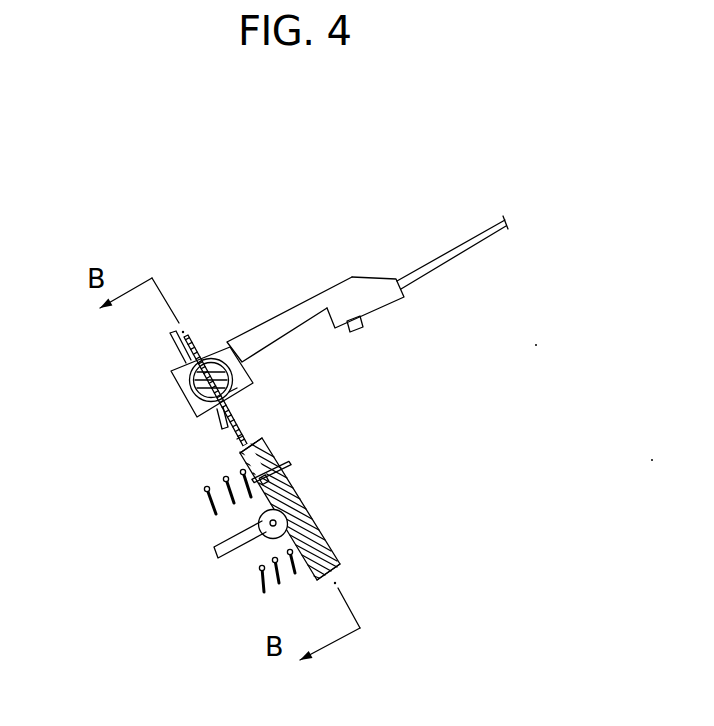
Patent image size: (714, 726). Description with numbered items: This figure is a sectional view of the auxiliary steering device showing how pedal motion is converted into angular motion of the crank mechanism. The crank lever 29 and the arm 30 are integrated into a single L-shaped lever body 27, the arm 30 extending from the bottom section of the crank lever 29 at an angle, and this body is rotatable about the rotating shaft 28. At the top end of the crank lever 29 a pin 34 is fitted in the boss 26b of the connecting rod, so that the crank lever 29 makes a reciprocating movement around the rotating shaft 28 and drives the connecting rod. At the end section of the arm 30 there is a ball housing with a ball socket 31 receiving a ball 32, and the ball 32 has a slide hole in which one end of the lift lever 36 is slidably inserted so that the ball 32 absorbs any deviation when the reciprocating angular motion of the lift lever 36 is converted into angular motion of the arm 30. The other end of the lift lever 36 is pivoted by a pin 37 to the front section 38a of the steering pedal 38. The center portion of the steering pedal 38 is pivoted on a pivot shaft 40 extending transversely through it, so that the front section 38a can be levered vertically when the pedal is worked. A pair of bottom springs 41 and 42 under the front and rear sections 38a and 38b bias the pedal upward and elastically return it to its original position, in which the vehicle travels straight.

The L-shaped lever body 27 is at (330, 220).
The crank lever 29 is at (322, 296).
The arm 30 is at (223, 347).
The boss 26b is at (392, 296).
The pin 34 is at (352, 326).
The rotating shaft 28 is at (183, 353).
The ball 32 is at (197, 390).
The ball socket 31 is at (233, 392).
The lift lever 36 is at (240, 437).
The pin 37 is at (330, 463).
The steering pedal 38 is at (326, 498).
The front section of steering pedal 38a is at (262, 436).
The rear section of steering pedal 38b is at (340, 566).
The pivot shaft 40 is at (262, 514).
The bottom spring 41 is at (213, 504).
The bottom spring 42 is at (258, 578).